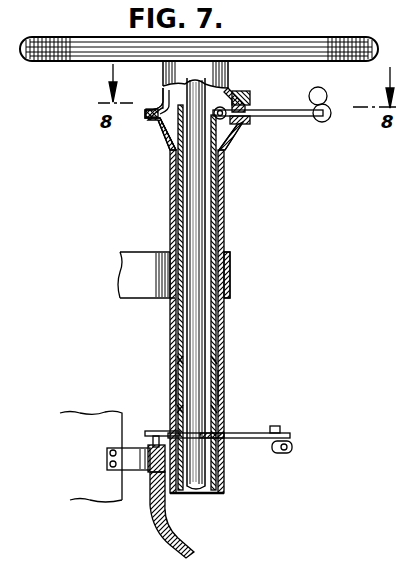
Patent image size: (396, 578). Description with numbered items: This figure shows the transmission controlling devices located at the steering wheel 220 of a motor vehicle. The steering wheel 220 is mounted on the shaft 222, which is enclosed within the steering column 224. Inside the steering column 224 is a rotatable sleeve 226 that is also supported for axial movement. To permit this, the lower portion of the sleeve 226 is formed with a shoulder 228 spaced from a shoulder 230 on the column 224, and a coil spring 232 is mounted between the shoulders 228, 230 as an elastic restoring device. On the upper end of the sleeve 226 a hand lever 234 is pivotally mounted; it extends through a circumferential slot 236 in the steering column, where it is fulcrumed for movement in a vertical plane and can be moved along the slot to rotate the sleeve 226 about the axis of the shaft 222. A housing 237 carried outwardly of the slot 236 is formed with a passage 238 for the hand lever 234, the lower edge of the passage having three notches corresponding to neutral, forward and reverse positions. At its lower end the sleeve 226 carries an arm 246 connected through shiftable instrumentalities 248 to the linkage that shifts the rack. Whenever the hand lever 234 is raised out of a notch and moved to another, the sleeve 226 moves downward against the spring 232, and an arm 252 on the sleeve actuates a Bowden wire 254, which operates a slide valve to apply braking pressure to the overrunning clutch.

The steering wheel 220 is at (318, 40).
The shaft 222 is at (203, 478).
The steering column 224 is at (225, 213).
The rotatable sleeve 226 is at (215, 334).
The shoulder 228 is at (216, 366).
The shoulder 230 is at (213, 413).
The coil spring 232 is at (218, 388).
The hand lever 234 is at (322, 122).
The circumferential slot 236 is at (236, 90).
The housing 237 is at (246, 124).
The passage 238 is at (316, 93).
The arm 246 is at (250, 439).
The shiftable instrumentalities 248 is at (294, 448).
The arm 252 is at (152, 430).
The Bowden wire 254 is at (152, 444).